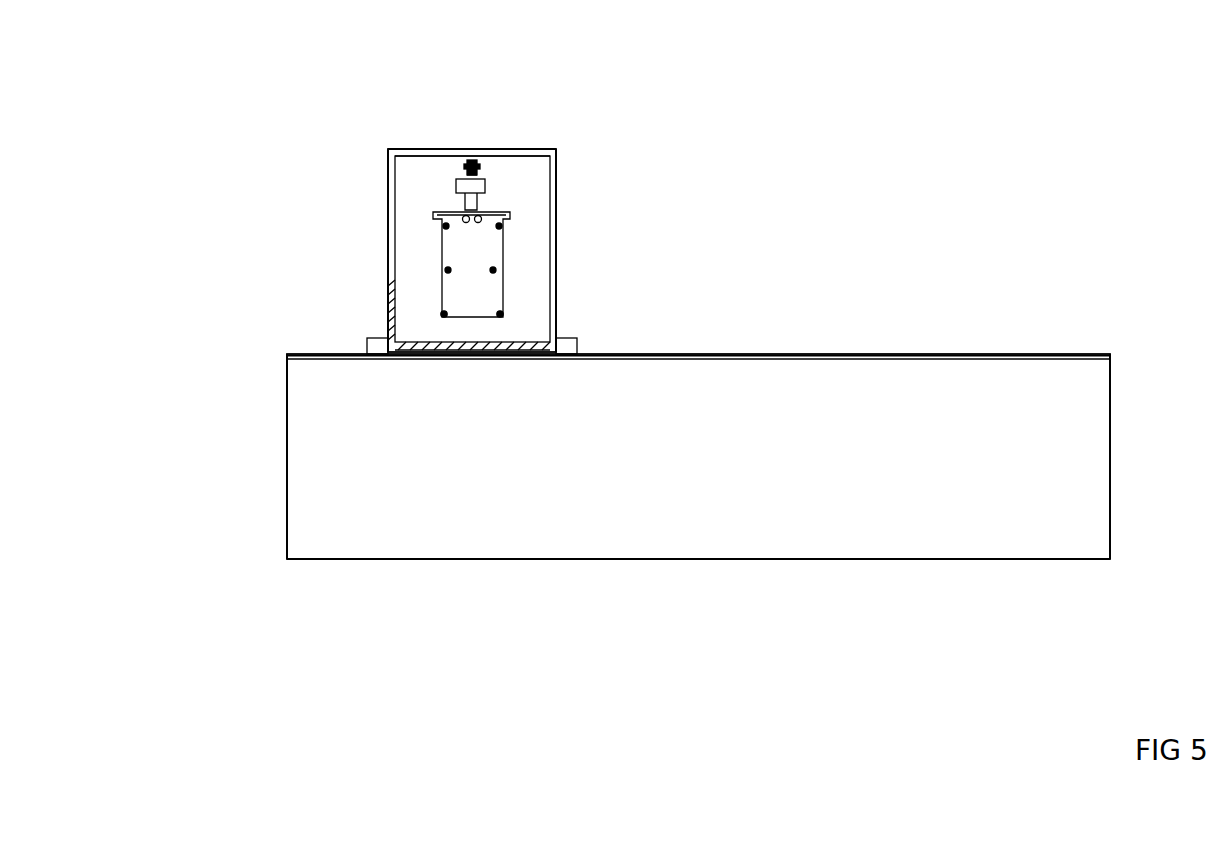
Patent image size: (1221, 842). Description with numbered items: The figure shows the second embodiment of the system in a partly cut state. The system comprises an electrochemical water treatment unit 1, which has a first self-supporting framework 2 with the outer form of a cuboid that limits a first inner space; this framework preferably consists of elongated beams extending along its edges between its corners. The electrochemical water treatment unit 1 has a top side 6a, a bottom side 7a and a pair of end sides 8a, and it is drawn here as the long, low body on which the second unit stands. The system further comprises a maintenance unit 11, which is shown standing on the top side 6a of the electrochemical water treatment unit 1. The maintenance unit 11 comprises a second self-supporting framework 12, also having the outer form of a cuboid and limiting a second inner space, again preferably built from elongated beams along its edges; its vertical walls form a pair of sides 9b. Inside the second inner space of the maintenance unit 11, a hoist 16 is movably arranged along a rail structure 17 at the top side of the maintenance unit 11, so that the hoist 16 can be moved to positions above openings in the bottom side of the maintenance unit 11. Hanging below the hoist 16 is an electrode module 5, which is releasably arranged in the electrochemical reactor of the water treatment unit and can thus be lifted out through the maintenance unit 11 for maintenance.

The electrochemical water treatment unit 1 is at (1010, 297).
The first self-supporting framework 2 is at (683, 357).
The electrode module 5 is at (458, 278).
The top side 6a is at (806, 342).
The bottom side 7a is at (489, 572).
The end sides 8a is at (275, 424).
The sides 9b is at (376, 221).
The maintenance unit 11 is at (360, 146).
The second self-supporting framework 12 is at (433, 152).
The hoist 16 is at (512, 185).
The rail structure 17 is at (472, 158).